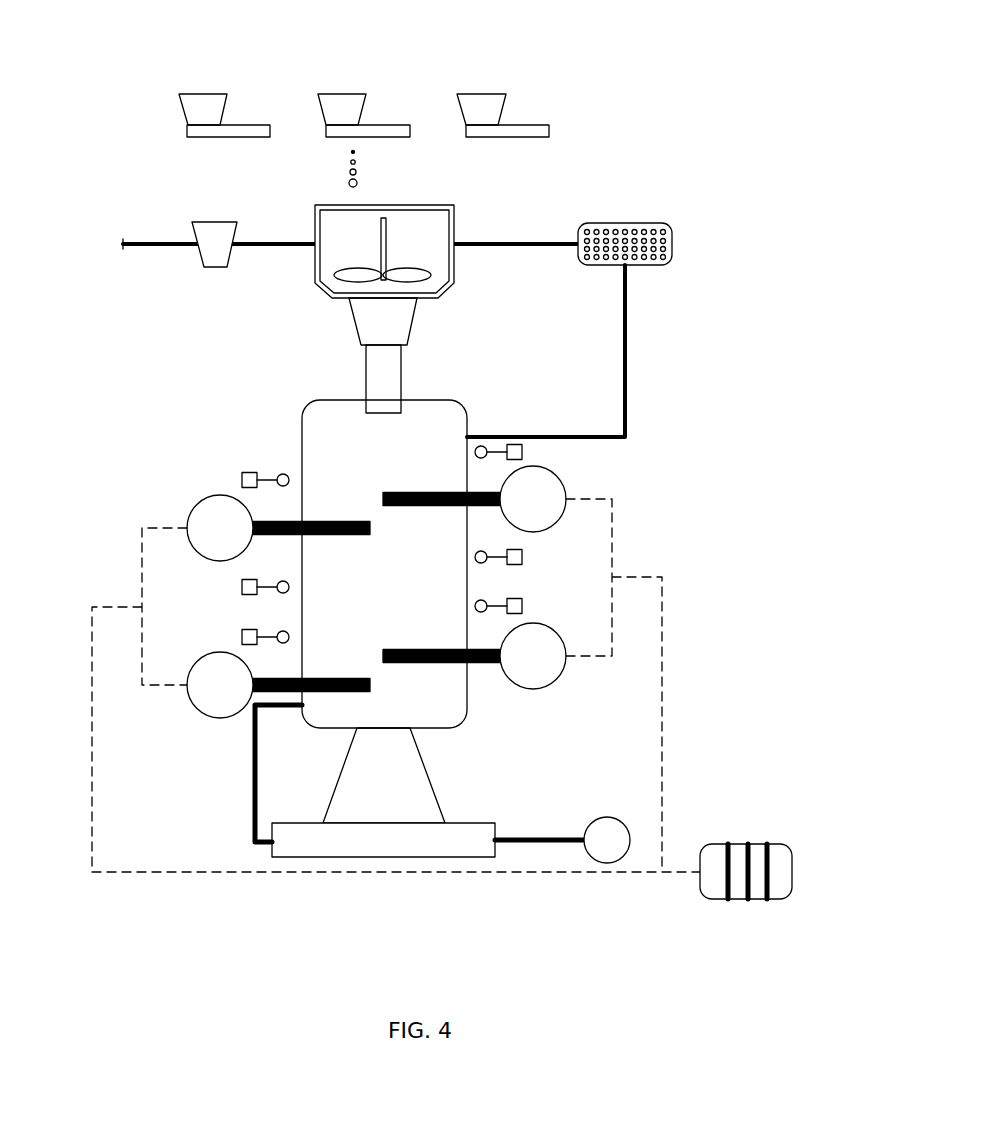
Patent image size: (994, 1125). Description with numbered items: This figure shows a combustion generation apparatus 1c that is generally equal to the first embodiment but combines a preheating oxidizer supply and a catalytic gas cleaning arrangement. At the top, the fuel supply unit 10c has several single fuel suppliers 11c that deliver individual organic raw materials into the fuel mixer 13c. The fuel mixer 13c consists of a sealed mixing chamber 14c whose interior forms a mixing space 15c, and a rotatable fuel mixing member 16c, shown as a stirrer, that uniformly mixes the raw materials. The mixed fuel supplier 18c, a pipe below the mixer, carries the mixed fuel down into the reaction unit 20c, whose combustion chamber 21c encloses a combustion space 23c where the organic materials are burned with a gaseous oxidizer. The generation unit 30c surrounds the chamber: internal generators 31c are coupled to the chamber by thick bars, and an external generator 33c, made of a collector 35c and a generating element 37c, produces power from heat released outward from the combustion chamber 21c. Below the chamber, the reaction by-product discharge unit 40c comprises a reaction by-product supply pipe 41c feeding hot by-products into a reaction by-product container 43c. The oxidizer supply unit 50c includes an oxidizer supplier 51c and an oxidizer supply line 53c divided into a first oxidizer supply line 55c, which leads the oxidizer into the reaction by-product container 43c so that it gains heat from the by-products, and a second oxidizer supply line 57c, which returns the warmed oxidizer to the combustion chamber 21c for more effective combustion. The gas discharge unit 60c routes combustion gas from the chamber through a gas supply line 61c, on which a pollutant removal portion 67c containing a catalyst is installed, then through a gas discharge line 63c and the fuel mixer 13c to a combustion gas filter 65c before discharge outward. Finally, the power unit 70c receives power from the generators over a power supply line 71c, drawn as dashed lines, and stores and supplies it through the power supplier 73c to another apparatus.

The combustion generation apparatus 1c is at (646, 30).
The fuel supply unit 10c is at (578, 193).
The single fuel supplier 11c is at (203, 94).
The fuel mixer 13c is at (440, 196).
The mixing chamber 14c is at (455, 217).
The mixing space 15c is at (332, 228).
The fuel mixing member 16c is at (453, 290).
The mixed fuel supplier 18c is at (432, 325).
The reaction unit 20c is at (252, 408).
The combustion chamber 21c is at (302, 450).
The combustion space 23c is at (386, 446).
The generation unit 30c is at (105, 500).
The internal generator 31c is at (195, 505).
The external generator 33c is at (706, 523).
The collector 35c is at (483, 600).
The generating element 37c is at (518, 598).
The reaction by-product discharge unit 40c is at (297, 900).
The reaction by-product supply pipe 41c is at (430, 790).
The reaction by-product container 43c is at (383, 858).
The oxidizer supply unit 50c is at (572, 887).
The oxidizer supplier 51c is at (607, 864).
The oxidizer supply line 53c is at (504, 930).
The first oxidizer supply line 55c is at (527, 845).
The second oxidizer supply line 57c is at (262, 846).
The gas discharge unit 60c is at (148, 195).
The gas supply line 61c is at (625, 327).
The gas discharge line 63c is at (278, 240).
The combustion gas filter 65c is at (217, 222).
The pollutant removal portion 67c is at (672, 243).
The power unit 70c is at (787, 764).
The power supply line 71c is at (662, 675).
The power supplier 73c is at (752, 844).